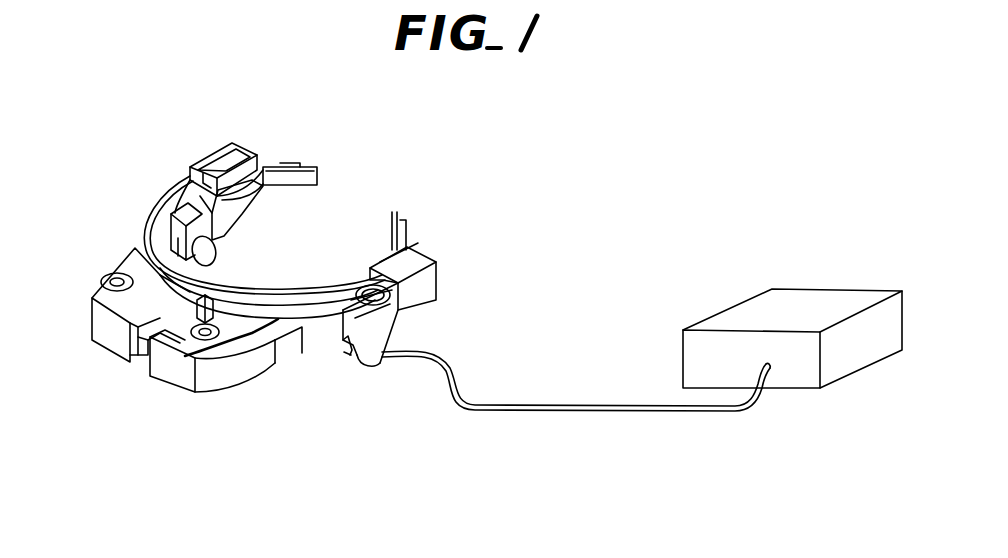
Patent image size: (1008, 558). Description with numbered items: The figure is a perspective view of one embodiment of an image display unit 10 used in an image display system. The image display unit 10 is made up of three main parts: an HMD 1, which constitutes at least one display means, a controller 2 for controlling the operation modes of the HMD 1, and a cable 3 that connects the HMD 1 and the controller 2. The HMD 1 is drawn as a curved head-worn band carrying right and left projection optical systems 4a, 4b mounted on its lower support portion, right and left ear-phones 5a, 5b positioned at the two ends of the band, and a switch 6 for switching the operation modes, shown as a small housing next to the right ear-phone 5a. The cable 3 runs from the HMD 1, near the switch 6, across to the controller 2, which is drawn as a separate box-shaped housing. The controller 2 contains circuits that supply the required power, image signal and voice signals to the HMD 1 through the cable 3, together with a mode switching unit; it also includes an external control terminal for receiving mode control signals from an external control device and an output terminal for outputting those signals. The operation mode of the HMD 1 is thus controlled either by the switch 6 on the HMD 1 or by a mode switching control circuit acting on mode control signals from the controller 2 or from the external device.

The HMD 1 is at (288, 142).
The image display unit 10 is at (483, 194).
The controller 2 is at (798, 297).
The cable 3 is at (592, 409).
The right projection optical system 4a is at (170, 372).
The left projection optical system 4b is at (108, 343).
The right ear-phone 5a is at (345, 353).
The left ear-phone 5b is at (208, 250).
The switch 6 is at (388, 327).